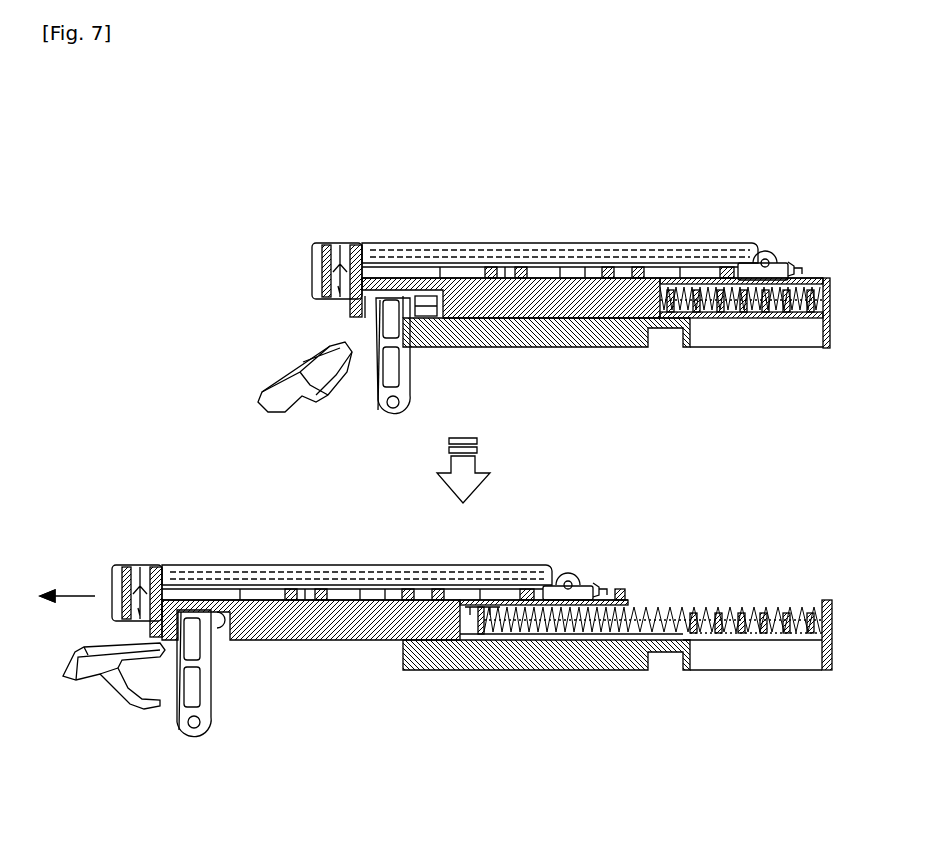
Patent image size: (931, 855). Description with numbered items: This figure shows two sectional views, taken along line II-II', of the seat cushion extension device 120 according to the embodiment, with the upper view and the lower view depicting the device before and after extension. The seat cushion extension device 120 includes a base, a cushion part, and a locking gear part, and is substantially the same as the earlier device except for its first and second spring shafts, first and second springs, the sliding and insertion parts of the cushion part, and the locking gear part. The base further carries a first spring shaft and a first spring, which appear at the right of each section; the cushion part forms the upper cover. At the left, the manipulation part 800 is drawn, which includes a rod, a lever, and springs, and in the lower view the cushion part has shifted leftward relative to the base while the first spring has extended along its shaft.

The seat cushion extension device 120 is at (306, 160).
The manipulation part 800 is at (172, 328).